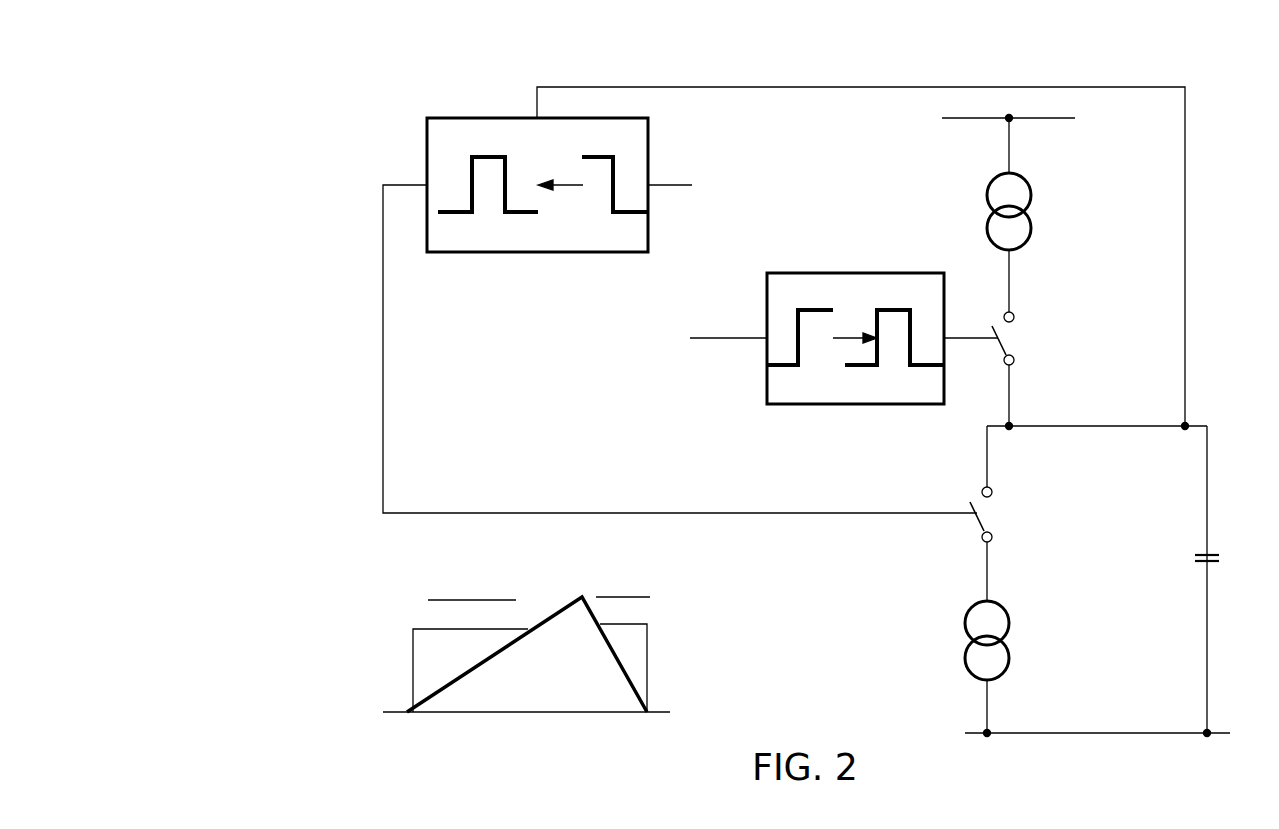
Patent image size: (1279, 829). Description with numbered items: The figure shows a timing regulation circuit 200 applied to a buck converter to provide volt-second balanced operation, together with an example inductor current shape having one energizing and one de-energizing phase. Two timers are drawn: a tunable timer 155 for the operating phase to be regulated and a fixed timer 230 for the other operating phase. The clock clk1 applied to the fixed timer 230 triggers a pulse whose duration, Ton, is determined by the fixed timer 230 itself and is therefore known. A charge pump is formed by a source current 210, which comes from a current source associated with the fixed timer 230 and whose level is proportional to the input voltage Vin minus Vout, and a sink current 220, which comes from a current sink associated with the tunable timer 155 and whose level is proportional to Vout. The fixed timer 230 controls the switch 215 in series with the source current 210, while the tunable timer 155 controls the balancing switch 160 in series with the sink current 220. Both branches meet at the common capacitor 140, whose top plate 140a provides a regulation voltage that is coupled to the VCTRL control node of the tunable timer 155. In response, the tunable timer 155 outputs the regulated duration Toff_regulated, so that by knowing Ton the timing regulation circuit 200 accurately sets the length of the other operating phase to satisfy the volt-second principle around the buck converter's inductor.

The timing regulation circuit 200 is at (280, 70).
The tunable timer 155 is at (476, 115).
The fixed timer 230 is at (905, 268).
The source current 210 is at (987, 196).
The switch 215 is at (1014, 361).
The balancing switch 160 is at (992, 539).
The sink current 220 is at (965, 656).
The top plate 140a is at (1202, 553).
The common capacitor 140 is at (1224, 578).